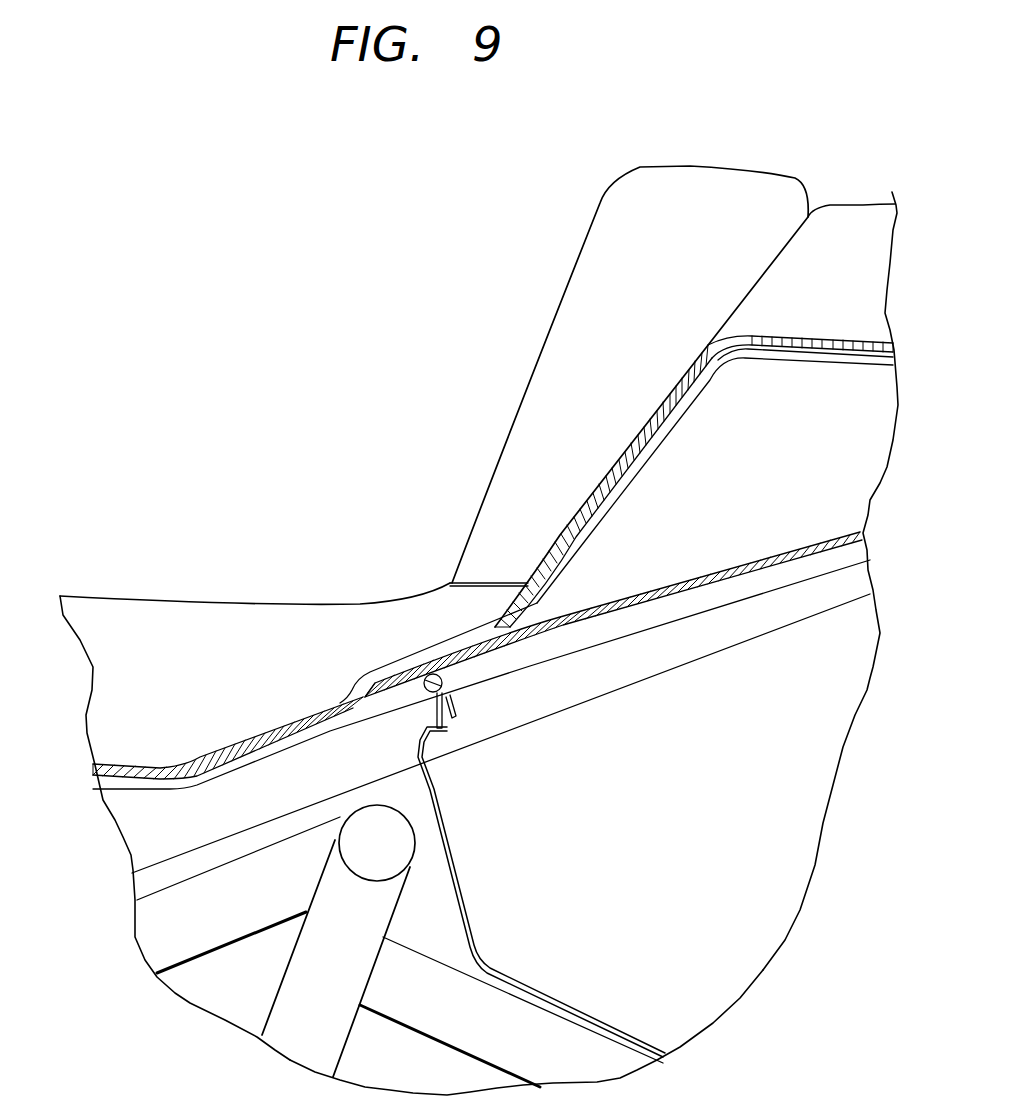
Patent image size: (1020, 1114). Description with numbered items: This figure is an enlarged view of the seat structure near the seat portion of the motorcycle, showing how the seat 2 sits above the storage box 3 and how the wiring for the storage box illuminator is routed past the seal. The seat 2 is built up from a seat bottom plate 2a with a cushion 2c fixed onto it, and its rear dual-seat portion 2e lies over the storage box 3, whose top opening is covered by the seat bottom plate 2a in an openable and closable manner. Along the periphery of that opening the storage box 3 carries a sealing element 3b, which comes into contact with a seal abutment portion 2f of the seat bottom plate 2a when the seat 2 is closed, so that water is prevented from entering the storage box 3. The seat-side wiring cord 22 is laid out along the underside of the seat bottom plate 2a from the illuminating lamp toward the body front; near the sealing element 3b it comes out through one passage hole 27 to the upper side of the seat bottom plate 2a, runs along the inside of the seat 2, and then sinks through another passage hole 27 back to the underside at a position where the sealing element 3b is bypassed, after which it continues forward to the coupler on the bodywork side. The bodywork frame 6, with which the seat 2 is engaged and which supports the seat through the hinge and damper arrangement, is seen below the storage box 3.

The seat 2 is at (427, 575).
The seat bottom plate 2a is at (707, 589).
The cushion 2c is at (188, 645).
The dual-seat portion 2e is at (840, 218).
The seal abutment portion 2f is at (433, 662).
The seat-side wiring cord 22 is at (367, 670).
The passage hole 27 is at (540, 600).
The storage box 3 is at (443, 817).
The sealing element 3b is at (447, 683).
The bodywork frame 6 is at (290, 997).